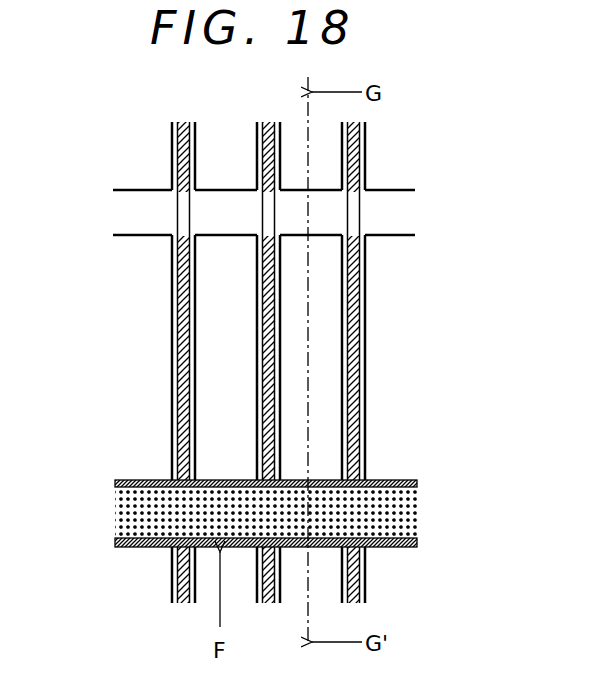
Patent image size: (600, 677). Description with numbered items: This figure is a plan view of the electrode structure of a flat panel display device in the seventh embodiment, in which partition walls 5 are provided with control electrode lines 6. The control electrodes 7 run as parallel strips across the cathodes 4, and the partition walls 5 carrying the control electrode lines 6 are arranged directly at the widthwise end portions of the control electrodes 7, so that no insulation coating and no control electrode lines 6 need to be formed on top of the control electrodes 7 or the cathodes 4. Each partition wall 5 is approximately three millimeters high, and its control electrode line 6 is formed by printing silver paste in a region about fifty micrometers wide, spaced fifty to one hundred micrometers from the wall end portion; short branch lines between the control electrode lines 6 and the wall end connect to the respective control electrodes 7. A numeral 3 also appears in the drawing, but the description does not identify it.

The bus electrode 3 is at (177, 212).
The cathode 4 is at (181, 433).
The partition wall 5 is at (130, 514).
The control electrode line 6 is at (418, 483).
The control electrode 7 is at (380, 320).